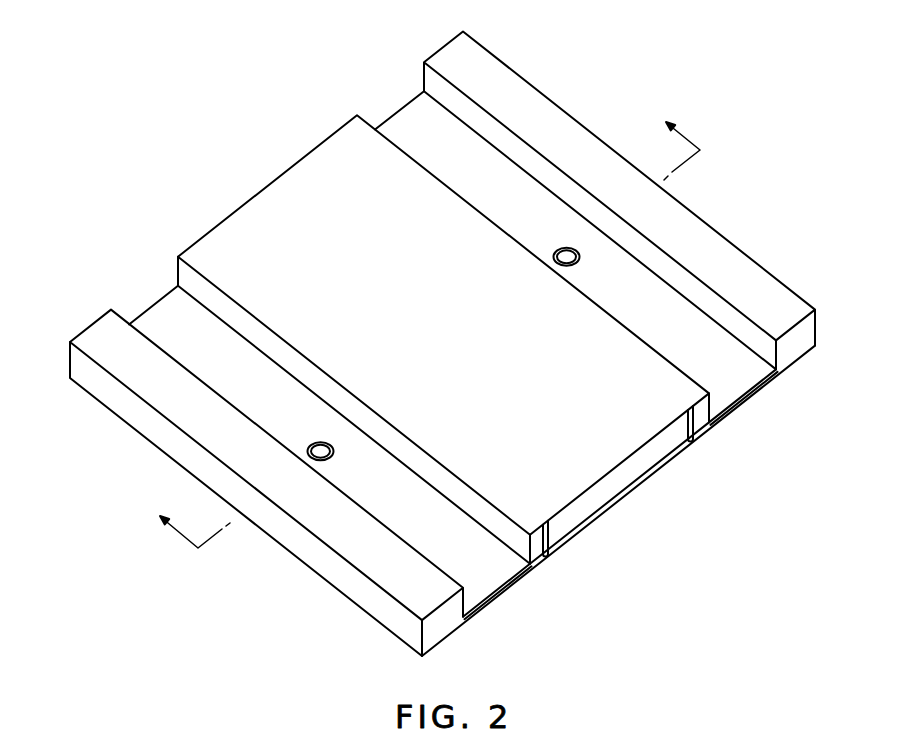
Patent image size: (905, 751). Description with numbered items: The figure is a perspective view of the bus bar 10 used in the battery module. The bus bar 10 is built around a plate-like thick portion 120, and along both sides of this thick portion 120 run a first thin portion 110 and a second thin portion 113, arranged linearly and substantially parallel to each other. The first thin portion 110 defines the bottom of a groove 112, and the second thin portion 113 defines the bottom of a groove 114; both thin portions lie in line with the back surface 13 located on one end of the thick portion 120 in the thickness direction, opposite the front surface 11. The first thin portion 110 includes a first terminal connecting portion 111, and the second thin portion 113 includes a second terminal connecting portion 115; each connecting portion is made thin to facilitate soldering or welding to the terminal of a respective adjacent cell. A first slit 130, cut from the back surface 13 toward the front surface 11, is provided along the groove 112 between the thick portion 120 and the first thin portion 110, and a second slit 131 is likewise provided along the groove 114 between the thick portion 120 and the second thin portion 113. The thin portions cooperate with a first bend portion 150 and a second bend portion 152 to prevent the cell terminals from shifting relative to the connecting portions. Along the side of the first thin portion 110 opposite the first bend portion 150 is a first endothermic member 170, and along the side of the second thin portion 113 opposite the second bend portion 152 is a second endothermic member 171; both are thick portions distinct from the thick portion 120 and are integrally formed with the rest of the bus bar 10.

The bus bar 10 is at (145, 128).
The front surface 11 is at (250, 222).
The back surface 13 is at (622, 500).
The first thin portion 110 is at (503, 588).
The first terminal connecting portion 111 is at (322, 447).
The groove 112 is at (156, 281).
The second thin portion 113 is at (753, 393).
The groove 114 is at (392, 100).
The second terminal connecting portion 115 is at (567, 250).
The thick portion 120 is at (443, 320).
The first slit 130 is at (553, 547).
The second slit 131 is at (697, 432).
The first bend portion 150 is at (462, 497).
The second bend portion 152 is at (715, 408).
The first endothermic member 170 is at (104, 338).
The second endothermic member 171 is at (710, 250).